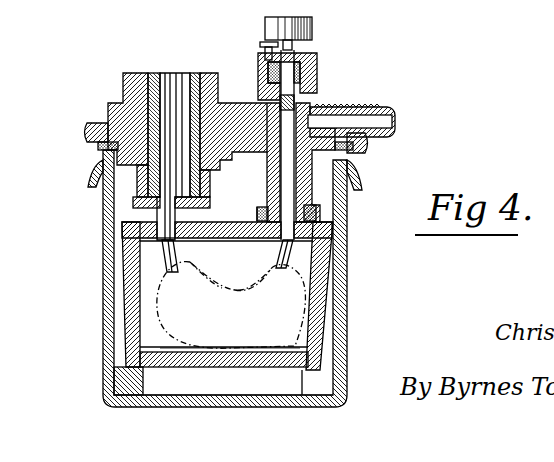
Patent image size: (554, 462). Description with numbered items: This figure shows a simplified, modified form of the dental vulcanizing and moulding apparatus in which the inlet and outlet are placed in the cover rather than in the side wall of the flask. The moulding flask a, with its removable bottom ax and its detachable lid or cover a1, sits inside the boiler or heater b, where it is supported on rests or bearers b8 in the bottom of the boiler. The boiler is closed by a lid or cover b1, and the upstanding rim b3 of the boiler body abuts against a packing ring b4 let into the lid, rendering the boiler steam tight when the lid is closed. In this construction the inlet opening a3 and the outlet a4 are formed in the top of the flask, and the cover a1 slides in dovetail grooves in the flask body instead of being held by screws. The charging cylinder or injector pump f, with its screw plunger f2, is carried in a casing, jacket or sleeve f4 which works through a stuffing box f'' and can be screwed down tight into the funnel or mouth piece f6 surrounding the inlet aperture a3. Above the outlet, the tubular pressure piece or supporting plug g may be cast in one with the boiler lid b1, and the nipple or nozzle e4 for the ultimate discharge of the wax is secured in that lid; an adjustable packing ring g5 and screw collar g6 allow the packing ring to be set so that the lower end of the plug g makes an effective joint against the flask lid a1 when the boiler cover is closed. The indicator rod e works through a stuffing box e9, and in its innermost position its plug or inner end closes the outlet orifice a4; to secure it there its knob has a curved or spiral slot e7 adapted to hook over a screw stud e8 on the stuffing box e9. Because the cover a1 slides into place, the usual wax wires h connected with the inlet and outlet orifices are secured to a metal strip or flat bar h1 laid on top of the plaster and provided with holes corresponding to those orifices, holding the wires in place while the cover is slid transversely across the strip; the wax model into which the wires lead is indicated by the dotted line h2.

The moulding flask a is at (137, 308).
The detachable lid or cover a1 is at (224, 237).
The inlet opening a3 is at (178, 243).
The outlet a4 is at (289, 247).
The removable bottom ax is at (176, 346).
The boiler or heater b is at (100, 290).
The lid or cover b1 is at (231, 82).
The upstanding rim b3 is at (374, 190).
The packing ring b4 is at (390, 158).
The rests or bearers b8 is at (133, 391).
The indicator rod e is at (280, 102).
The nipple or nozzle e4 is at (352, 107).
The curved or spiral slot e7 is at (270, 35).
The screw stud e8 is at (260, 45).
The stuffing box e9 is at (318, 68).
The charging cylinder or injector pump f is at (190, 142).
The stuffing box f'' is at (175, 135).
The screw plunger f2 is at (205, 186).
The casing, jacket or sleeve f4 is at (135, 205).
The funnel or mouth piece f6 is at (164, 256).
The tubular pressure piece or supporting plug g is at (270, 164).
The adjustable packing ring g5 is at (258, 214).
The screw collar g6 is at (263, 207).
The wax wires h is at (275, 262).
The metal strip or flat bar h1 is at (217, 242).
The wax model h2 is at (258, 292).